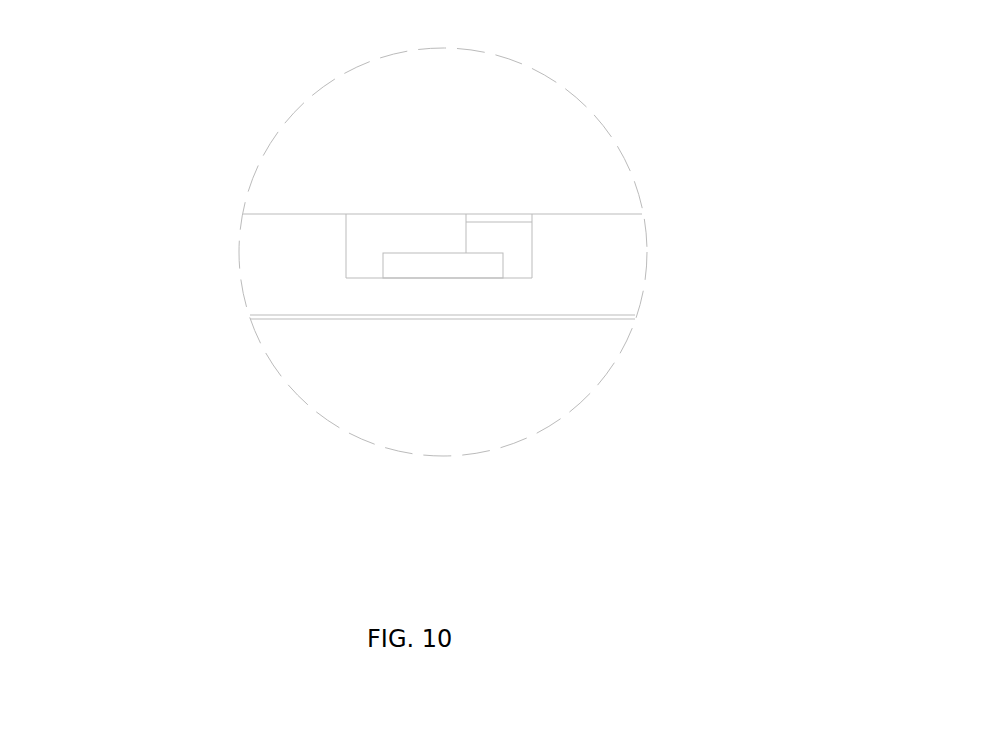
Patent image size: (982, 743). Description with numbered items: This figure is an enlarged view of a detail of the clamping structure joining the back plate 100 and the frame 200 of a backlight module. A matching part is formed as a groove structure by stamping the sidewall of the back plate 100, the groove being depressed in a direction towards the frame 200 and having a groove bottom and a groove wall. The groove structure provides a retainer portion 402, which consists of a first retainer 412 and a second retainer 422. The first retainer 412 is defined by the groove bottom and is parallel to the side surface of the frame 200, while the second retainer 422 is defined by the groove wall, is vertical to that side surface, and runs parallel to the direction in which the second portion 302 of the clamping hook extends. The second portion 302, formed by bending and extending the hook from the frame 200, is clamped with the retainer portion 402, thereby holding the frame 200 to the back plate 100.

The back plate 100 is at (587, 248).
The frame 200 is at (522, 262).
The second portion 302 is at (456, 262).
The retainer portion 402 is at (288, 147).
The first retainer 412 is at (380, 223).
The second retainer 422 is at (365, 278).